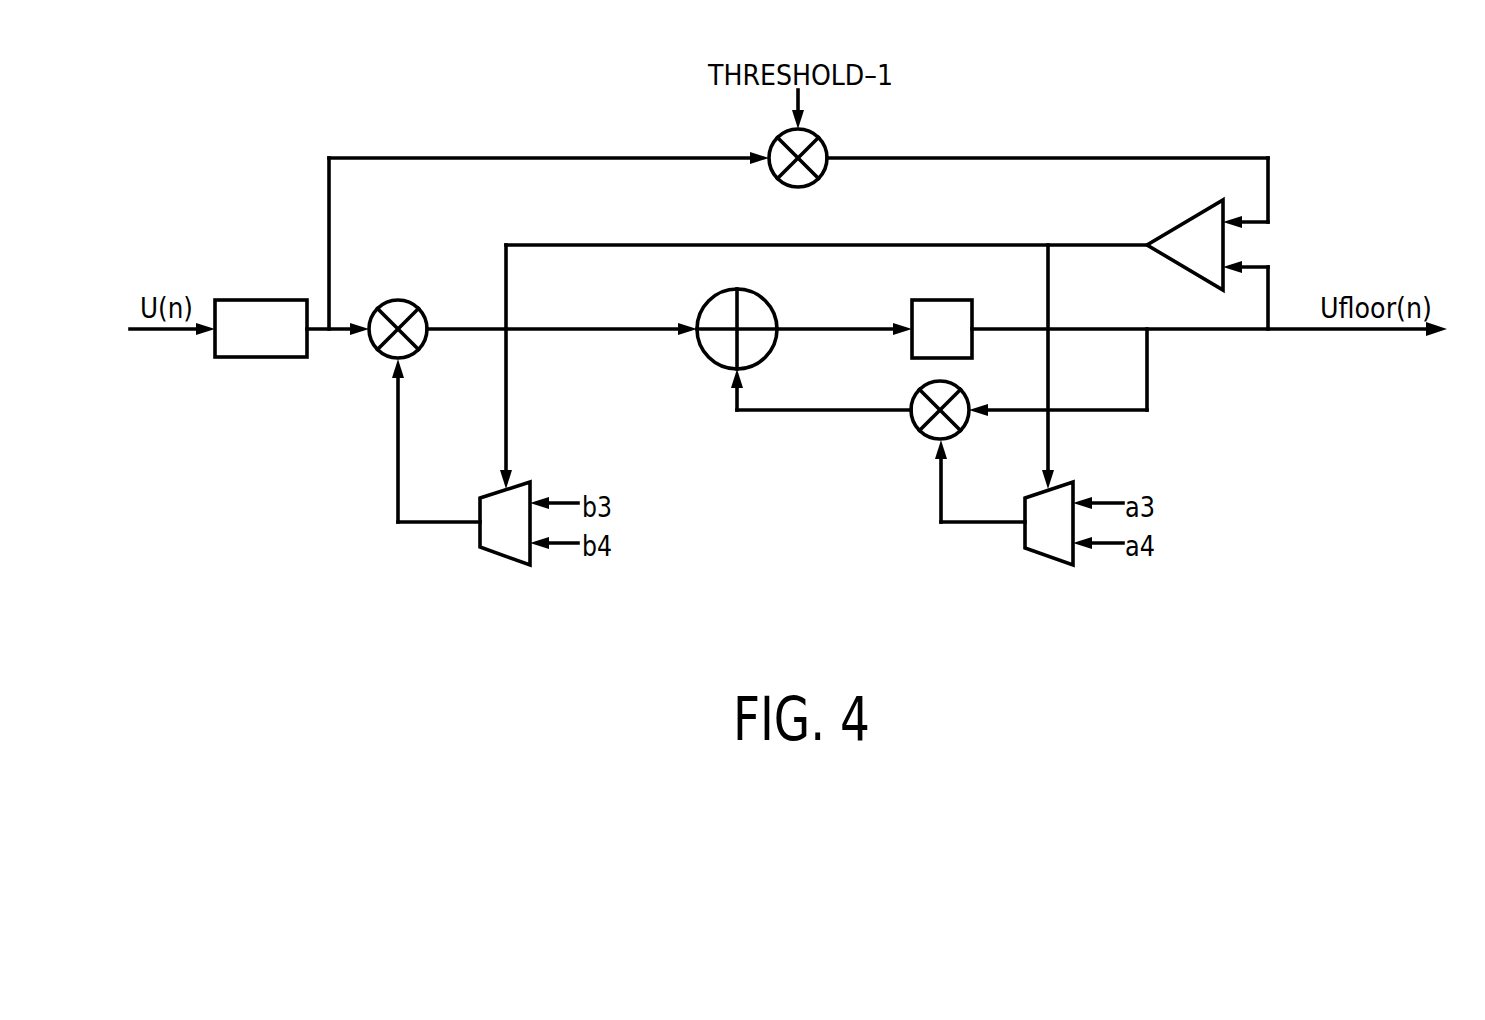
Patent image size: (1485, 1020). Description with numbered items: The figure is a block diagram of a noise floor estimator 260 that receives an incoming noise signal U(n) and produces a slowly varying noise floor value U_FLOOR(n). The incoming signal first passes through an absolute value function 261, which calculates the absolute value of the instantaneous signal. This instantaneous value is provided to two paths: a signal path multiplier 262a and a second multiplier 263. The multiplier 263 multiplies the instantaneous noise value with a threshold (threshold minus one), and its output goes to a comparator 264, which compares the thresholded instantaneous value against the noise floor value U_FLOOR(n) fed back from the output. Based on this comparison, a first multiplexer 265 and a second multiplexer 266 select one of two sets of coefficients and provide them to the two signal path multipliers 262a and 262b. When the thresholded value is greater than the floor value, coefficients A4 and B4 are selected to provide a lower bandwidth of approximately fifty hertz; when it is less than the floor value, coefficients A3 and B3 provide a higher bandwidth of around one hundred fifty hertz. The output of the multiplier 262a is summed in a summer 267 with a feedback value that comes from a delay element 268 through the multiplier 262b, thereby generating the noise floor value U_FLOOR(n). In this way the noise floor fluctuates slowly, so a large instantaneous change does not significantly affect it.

The noise floor estimator 260 is at (356, 38).
The absolute value function 261 is at (258, 357).
The first multiplier 262a is at (400, 300).
The second signal path multiplier 262b is at (930, 437).
The second multiplier 263 is at (797, 187).
The comparator 264 is at (1185, 220).
The first multiplexer 265 is at (505, 557).
The second multiplexer 266 is at (1048, 557).
The summer 267 is at (708, 297).
The delay element 268 is at (938, 300).